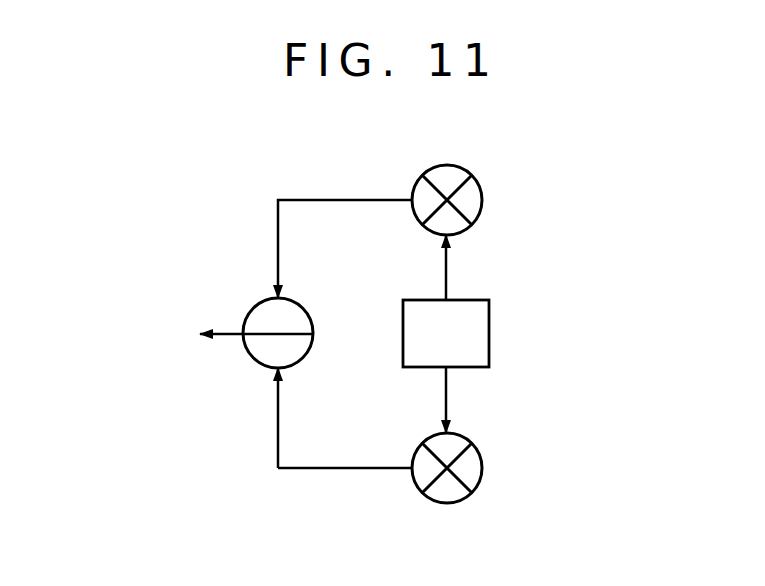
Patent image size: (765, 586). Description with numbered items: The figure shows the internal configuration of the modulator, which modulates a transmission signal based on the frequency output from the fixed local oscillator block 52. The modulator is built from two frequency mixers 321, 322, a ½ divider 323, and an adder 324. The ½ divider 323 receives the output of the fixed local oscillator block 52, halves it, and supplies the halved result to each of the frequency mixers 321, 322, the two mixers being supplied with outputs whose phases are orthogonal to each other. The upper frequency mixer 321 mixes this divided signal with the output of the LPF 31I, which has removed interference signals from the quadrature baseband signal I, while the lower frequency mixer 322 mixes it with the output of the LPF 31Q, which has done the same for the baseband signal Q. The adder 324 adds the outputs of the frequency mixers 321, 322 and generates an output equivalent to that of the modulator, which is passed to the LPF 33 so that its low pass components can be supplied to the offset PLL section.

The frequency mixer 321 is at (462, 166).
The frequency mixer 322 is at (471, 492).
The ½ divider 323 is at (476, 299).
The adder 324 is at (248, 358).
The LPF (I) 31I is at (482, 200).
The LPF (Q) 31Q is at (482, 468).
The fixed local oscillator block 52 is at (489, 334).
The LPF 33 is at (177, 335).